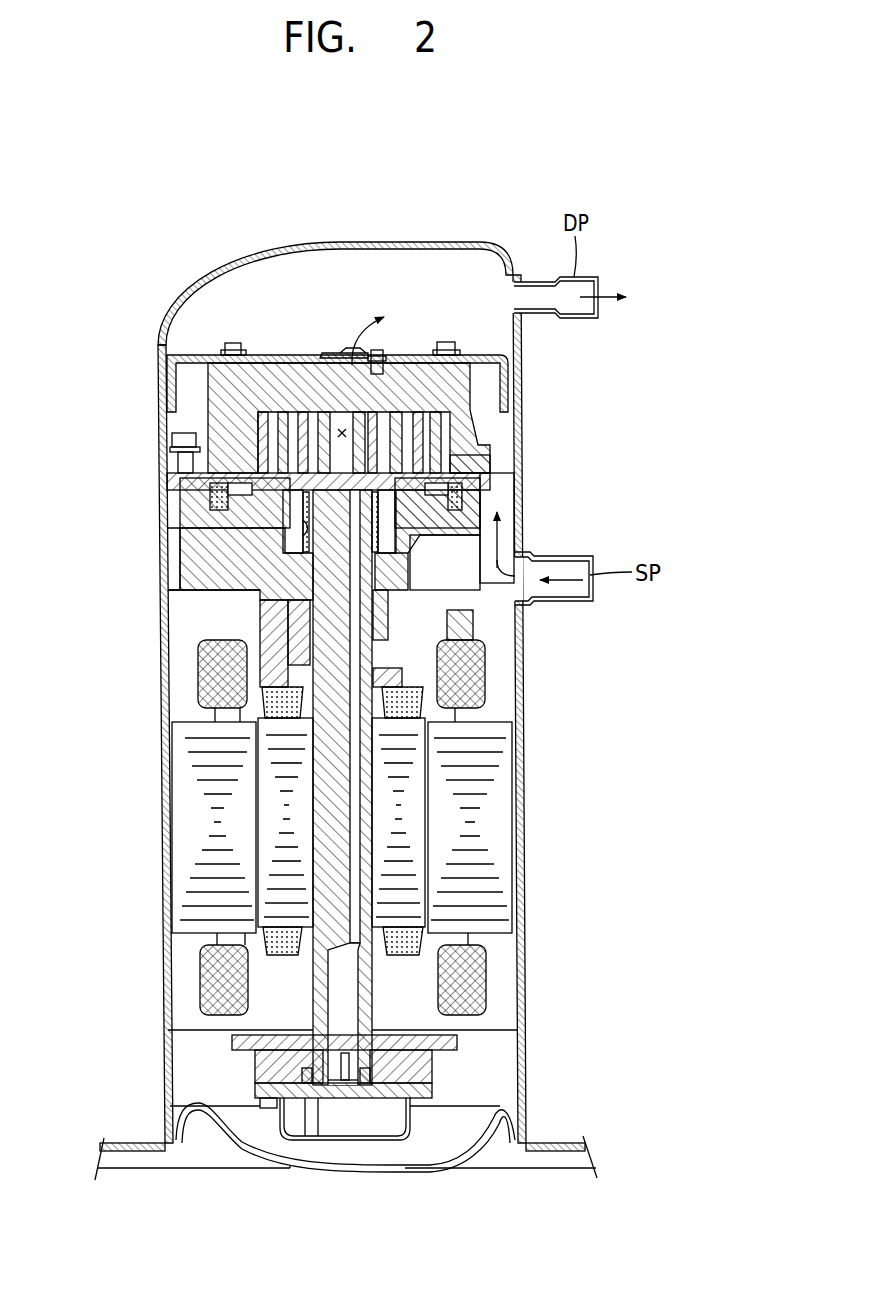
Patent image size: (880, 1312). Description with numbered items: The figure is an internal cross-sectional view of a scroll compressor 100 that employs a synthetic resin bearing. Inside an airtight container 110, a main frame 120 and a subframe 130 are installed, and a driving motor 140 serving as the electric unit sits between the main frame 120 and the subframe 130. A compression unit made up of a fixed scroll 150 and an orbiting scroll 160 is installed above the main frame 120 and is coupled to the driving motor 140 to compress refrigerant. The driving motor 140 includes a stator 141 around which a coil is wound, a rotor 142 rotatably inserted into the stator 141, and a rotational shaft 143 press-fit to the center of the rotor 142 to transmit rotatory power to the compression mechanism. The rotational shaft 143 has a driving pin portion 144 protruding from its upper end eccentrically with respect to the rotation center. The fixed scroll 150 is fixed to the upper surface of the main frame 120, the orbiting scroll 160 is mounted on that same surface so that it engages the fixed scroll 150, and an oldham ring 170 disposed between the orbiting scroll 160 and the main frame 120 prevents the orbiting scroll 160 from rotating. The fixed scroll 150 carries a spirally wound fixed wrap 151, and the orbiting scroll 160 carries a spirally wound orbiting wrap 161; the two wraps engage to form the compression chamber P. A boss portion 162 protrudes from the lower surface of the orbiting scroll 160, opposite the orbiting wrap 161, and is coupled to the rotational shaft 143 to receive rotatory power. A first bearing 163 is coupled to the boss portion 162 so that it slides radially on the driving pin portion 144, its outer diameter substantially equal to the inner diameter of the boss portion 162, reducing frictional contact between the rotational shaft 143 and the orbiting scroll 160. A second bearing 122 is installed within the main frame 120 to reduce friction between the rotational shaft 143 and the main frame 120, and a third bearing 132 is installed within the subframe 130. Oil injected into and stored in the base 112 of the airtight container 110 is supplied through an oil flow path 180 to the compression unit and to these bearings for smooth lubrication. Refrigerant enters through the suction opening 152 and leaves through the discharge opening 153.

The scroll compressor 100 is at (57, 280).
The airtight container 110 is at (158, 331).
The base 112 is at (448, 1158).
The main frame 120 is at (200, 515).
The second bearing 122 is at (300, 632).
The subframe 130 is at (258, 1070).
The third bearing 132 is at (325, 1037).
The driving motor 140 is at (86, 755).
The stator 141 is at (185, 765).
The rotor 142 is at (272, 808).
The rotational shaft 143 is at (310, 852).
The driving pin portion 144 is at (480, 525).
The fixed scroll 150 is at (225, 383).
The fixed wrap 151 is at (265, 418).
The suction opening 152 is at (470, 450).
The discharge opening 153 is at (336, 355).
The orbiting scroll 160 is at (275, 478).
The orbiting wrap 161 is at (265, 438).
The boss portion 162 is at (378, 510).
The first bearing 163 is at (300, 540).
The oldham ring 170 is at (200, 500).
The oil flow path 180 is at (358, 918).
The compression chamber P is at (345, 432).